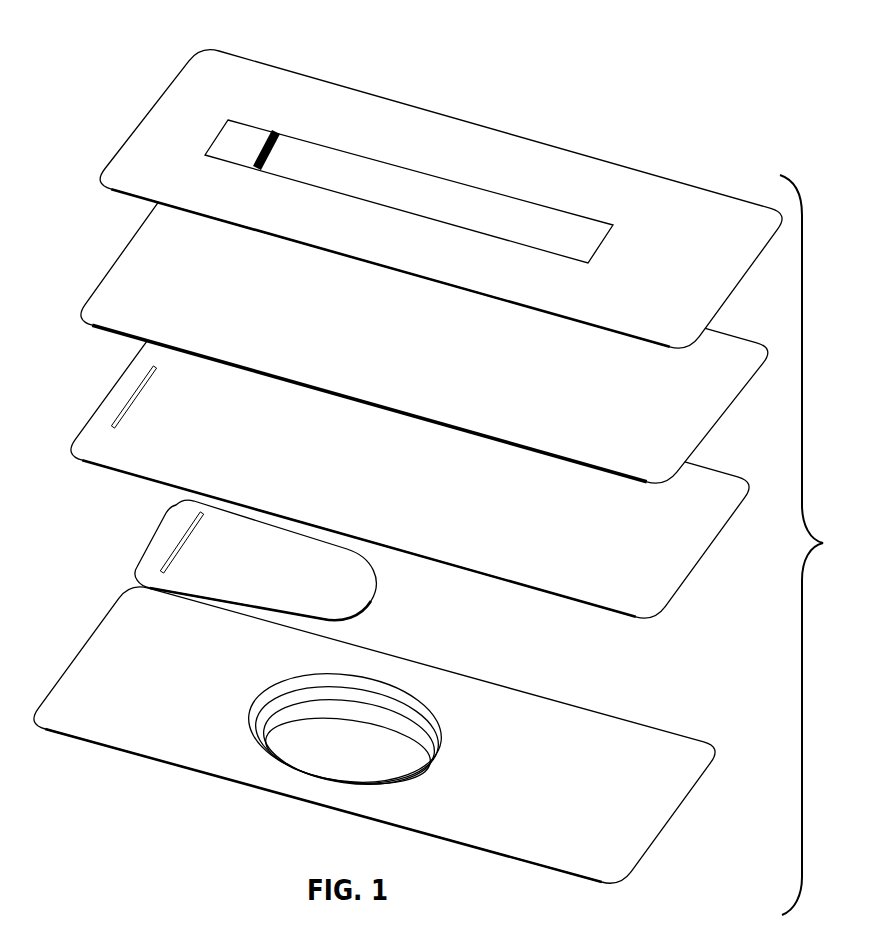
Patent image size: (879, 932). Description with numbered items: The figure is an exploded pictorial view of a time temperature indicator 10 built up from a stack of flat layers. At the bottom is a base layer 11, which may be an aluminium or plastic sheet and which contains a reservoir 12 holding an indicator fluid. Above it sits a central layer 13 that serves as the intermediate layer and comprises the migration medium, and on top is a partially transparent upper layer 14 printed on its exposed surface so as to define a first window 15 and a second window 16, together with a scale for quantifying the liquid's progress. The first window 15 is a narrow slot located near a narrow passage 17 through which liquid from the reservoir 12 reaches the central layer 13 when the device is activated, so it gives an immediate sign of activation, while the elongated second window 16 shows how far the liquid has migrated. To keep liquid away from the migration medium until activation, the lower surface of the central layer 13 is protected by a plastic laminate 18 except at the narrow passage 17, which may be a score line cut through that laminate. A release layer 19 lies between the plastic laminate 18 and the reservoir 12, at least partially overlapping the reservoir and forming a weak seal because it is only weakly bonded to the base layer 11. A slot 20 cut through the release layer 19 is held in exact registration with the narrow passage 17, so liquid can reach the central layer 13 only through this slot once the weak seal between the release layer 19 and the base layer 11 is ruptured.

The time temperature indicator 10 is at (189, 806).
The base layer 11 is at (591, 803).
The reservoir 12 is at (357, 761).
The central layer 13 is at (663, 396).
The upper layer 14 is at (675, 271).
The first window 15 is at (237, 142).
The second window 16 is at (357, 173).
The narrow passage 17 is at (140, 391).
The plastic laminate 18 is at (650, 543).
The release layer 19 is at (326, 593).
The slot 20 is at (196, 527).